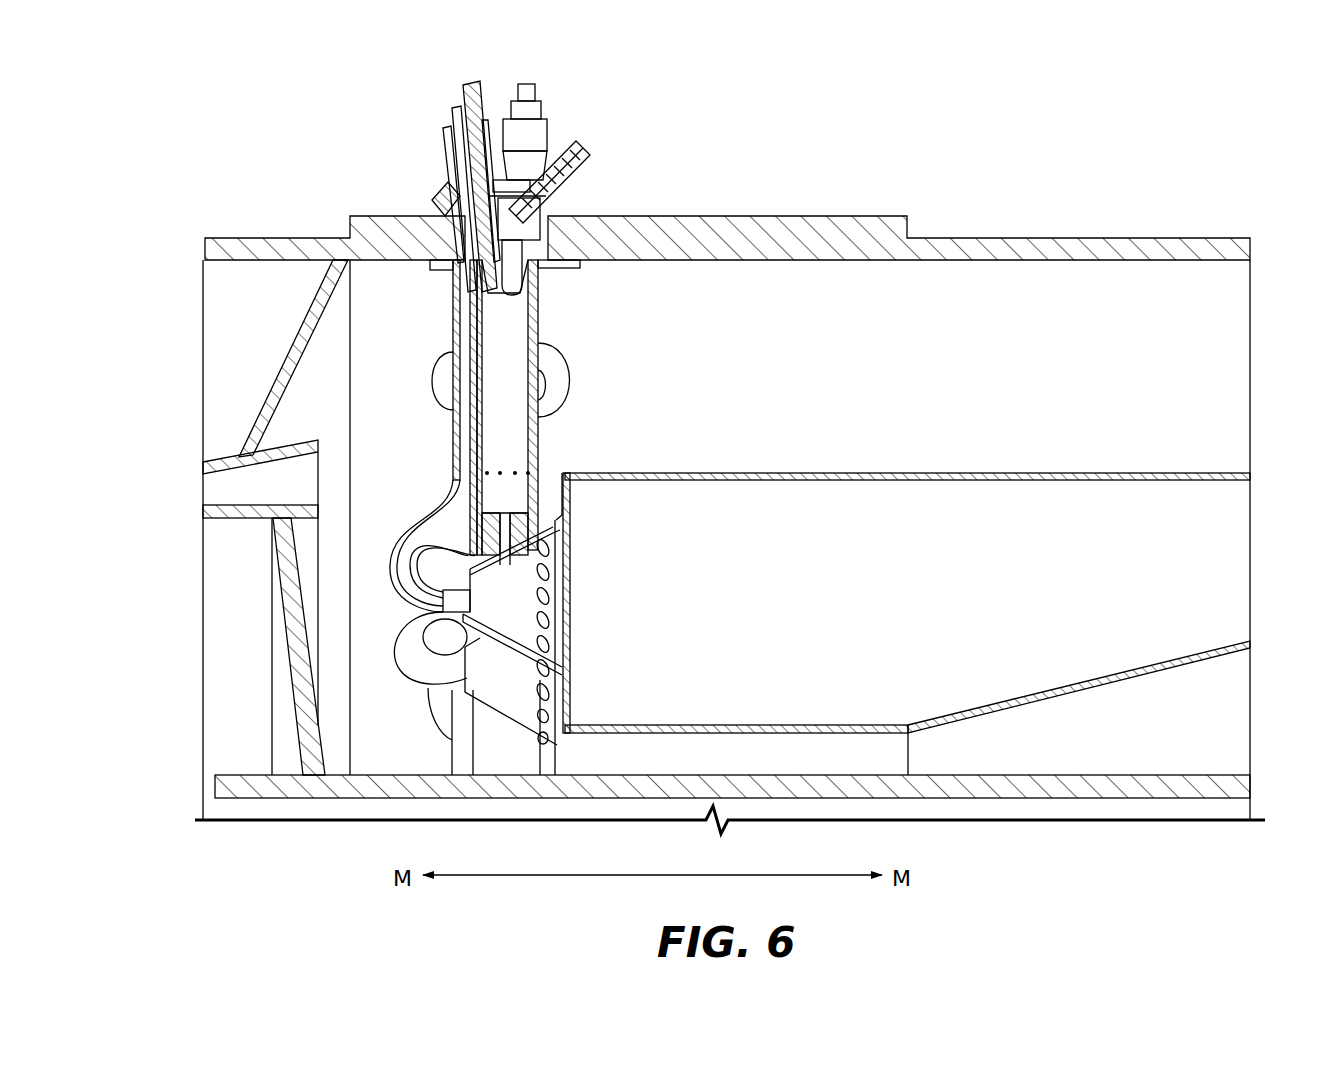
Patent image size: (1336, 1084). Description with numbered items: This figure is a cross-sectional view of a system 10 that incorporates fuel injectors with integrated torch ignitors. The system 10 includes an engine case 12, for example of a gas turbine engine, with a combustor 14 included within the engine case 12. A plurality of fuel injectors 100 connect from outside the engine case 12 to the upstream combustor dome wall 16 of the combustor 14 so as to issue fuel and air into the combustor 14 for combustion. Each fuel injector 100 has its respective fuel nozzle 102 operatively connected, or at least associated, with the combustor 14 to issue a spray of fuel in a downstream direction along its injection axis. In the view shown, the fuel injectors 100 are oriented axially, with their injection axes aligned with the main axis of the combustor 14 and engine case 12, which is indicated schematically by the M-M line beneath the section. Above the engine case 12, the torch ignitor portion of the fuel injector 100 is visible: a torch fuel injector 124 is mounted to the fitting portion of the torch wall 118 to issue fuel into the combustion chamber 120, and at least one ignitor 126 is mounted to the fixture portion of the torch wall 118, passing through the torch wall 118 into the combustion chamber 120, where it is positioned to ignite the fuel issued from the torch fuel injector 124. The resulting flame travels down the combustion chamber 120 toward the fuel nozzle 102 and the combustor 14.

The system 10 is at (210, 106).
The engine case 12 is at (787, 238).
The combustor 14 is at (818, 466).
The upstream combustor dome wall 16 is at (553, 480).
The fuel injector 100 is at (445, 322).
The fuel nozzle 102 is at (525, 608).
The torch wall 118 is at (545, 272).
The combustion chamber 120 is at (527, 379).
The torch fuel injector 124 is at (540, 215).
The ignitor 126 is at (460, 86).